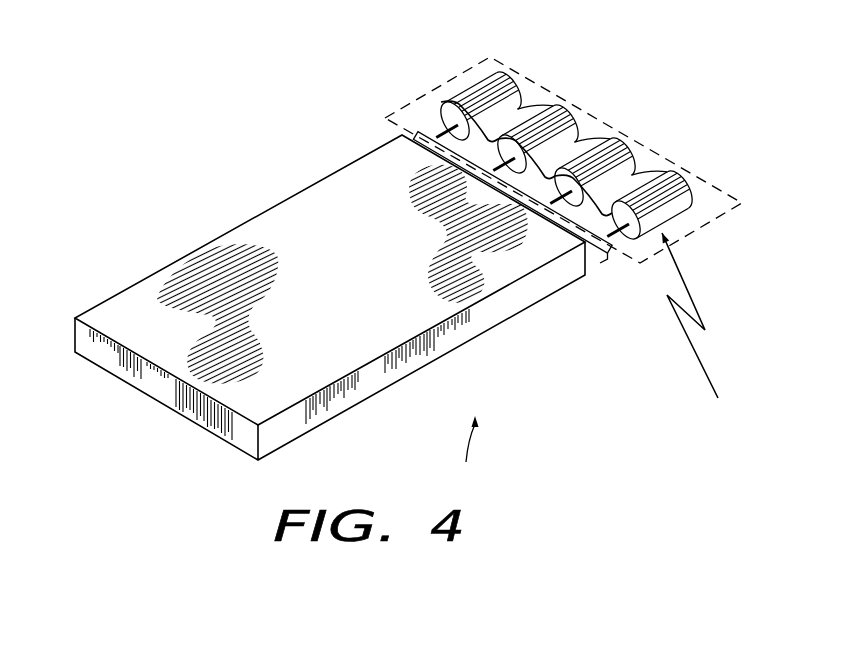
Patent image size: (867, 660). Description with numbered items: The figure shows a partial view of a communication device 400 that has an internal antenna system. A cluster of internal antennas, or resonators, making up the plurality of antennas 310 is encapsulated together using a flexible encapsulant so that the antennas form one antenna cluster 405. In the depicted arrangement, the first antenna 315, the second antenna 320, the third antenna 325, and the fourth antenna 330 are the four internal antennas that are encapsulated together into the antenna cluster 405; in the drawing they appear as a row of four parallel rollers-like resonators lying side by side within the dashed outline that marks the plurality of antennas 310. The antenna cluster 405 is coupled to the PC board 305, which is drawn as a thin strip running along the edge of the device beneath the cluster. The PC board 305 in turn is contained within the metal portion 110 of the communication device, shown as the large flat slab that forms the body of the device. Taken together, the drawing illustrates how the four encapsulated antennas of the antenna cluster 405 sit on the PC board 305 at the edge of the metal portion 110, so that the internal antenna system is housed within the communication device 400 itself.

The metal portion 110 is at (367, 113).
The PC board 305 is at (597, 257).
The plurality of antennas 310 is at (685, 222).
The first antenna 315 is at (667, 168).
The second antenna 320 is at (615, 130).
The third antenna 325 is at (553, 112).
The fourth antenna 330 is at (503, 73).
The communication device 400 is at (458, 451).
The antenna cluster 405 is at (699, 329).